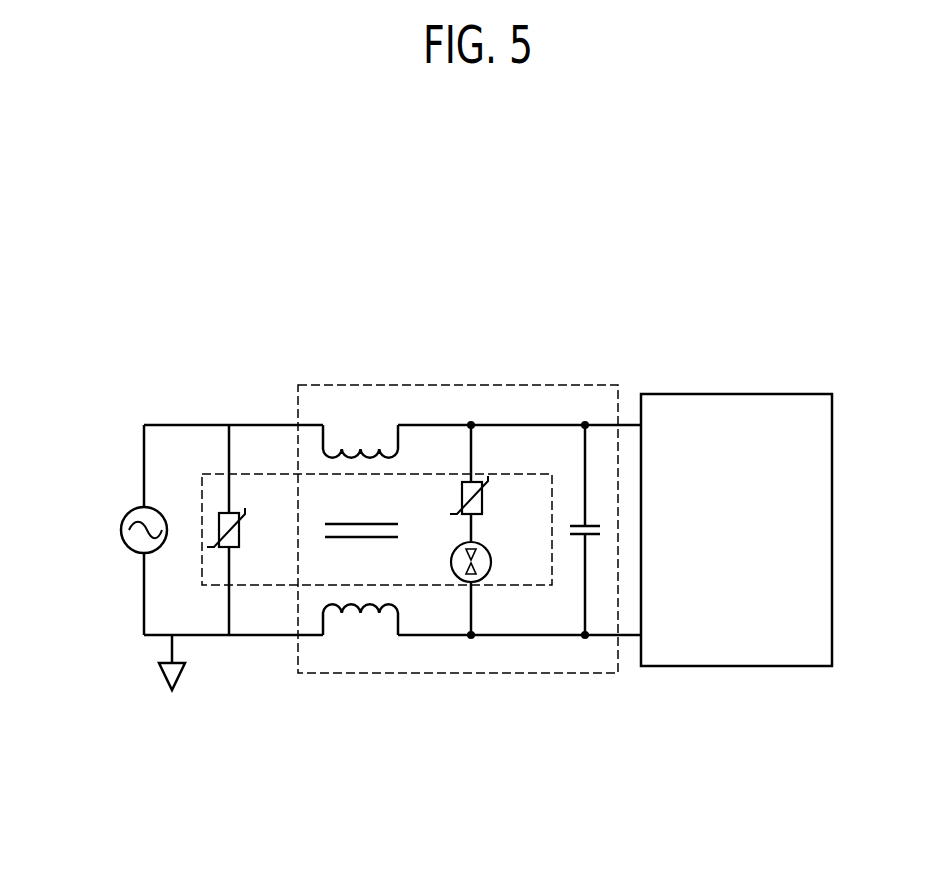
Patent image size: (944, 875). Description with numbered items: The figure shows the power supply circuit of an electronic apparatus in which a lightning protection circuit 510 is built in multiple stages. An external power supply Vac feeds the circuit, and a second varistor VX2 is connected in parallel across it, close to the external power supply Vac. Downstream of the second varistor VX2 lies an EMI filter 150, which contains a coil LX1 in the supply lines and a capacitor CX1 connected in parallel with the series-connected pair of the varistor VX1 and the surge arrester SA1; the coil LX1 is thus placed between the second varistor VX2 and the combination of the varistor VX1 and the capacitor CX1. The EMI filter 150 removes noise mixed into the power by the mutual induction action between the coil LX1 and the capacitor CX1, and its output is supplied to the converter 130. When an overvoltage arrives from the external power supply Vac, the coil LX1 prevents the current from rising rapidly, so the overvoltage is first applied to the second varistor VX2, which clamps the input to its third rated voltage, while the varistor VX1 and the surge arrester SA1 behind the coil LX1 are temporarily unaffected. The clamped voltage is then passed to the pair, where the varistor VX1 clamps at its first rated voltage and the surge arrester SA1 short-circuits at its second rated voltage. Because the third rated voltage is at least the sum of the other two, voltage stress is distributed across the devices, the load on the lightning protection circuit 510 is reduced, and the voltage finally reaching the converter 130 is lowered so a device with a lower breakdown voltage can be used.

The lightning protection circuit 510 is at (377, 590).
The EMI filter 150 is at (458, 570).
The converter 130 is at (737, 666).
The varistor VX1 is at (492, 483).
The second varistor VX2 is at (247, 530).
The surge arrester SA1 is at (493, 588).
The coil LX1 is at (360, 547).
The capacitor CX1 is at (584, 547).
The external power supply Vac is at (115, 530).